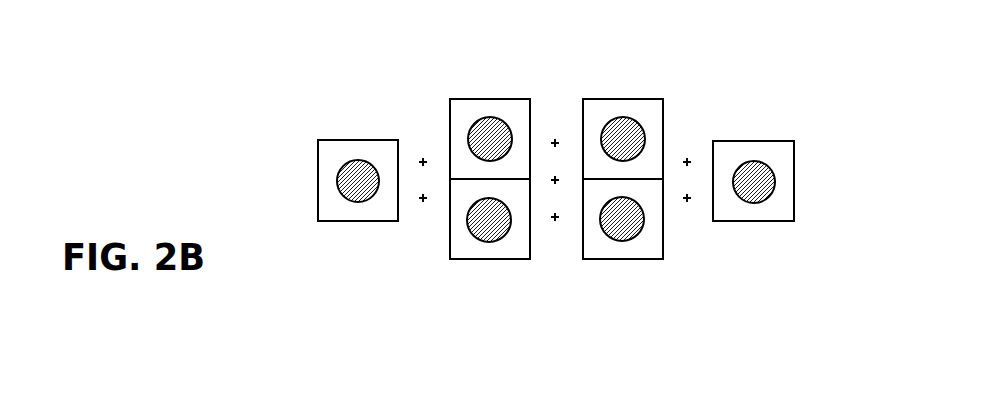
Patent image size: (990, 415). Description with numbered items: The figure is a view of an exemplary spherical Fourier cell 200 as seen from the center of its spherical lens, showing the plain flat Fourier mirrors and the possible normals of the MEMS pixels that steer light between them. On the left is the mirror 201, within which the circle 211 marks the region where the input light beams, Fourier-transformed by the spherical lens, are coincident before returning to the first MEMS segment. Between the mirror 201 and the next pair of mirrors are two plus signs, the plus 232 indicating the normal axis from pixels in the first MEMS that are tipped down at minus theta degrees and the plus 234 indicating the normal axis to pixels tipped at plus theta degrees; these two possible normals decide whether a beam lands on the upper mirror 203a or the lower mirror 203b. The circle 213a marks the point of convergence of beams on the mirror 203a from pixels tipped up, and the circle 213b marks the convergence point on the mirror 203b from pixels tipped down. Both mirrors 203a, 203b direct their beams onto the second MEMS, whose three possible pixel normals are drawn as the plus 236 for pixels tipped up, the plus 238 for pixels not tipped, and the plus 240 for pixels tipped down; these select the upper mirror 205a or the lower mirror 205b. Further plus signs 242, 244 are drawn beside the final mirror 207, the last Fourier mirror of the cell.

The spherical Fourier cell 200 is at (848, 181).
The mirror 201 is at (318, 171).
The circle 211 is at (342, 195).
The mirror 203a is at (497, 99).
The mirror 203b is at (506, 259).
The circle 213a is at (476, 121).
The circle 213b is at (472, 205).
The mirror 205a is at (628, 99).
The mirror 205b is at (635, 259).
The mirror 207 is at (753, 141).
The plus sign 232 is at (418, 168).
The plus sign 234 is at (423, 208).
The plus sign 236 is at (560, 132).
The plus sign 238 is at (553, 188).
The plus sign 240 is at (558, 228).
The plus sign 242 is at (690, 148).
The plus sign 244 is at (687, 207).